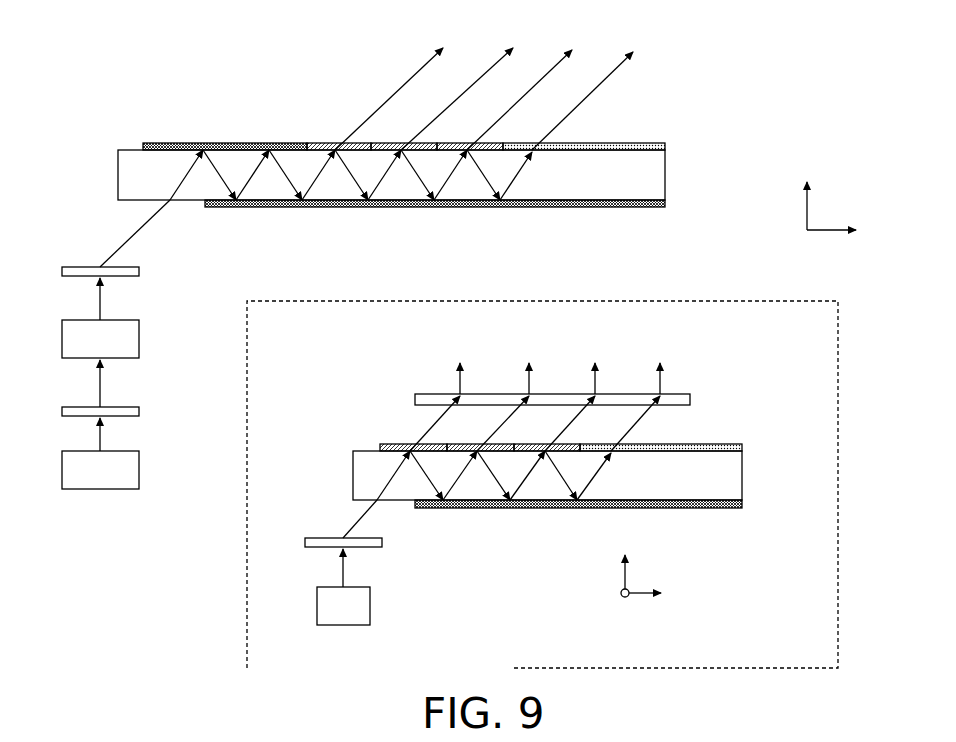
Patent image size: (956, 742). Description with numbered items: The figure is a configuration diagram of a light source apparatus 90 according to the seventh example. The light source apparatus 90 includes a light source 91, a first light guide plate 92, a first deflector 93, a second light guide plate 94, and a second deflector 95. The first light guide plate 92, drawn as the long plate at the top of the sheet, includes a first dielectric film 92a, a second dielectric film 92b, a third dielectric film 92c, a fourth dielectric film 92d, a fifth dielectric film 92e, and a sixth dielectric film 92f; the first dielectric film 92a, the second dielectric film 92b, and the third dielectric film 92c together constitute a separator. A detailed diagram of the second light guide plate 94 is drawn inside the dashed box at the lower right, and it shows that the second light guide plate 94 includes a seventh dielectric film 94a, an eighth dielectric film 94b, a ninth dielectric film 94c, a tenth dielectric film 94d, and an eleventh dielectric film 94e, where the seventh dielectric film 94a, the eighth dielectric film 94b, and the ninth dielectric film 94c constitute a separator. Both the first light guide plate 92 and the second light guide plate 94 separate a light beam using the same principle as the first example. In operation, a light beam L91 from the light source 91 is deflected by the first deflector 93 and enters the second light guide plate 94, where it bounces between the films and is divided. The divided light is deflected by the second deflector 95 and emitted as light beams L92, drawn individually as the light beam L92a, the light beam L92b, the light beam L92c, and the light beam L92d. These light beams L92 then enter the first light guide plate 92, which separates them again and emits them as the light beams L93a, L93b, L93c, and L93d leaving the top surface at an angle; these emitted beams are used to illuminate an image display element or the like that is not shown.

The light source apparatus 90 is at (777, 28).
The light source 91 is at (139, 465).
The first light guide plate 92 is at (118, 187).
The first dielectric film 92a is at (345, 129).
The second dielectric film 92b is at (412, 129).
The third dielectric film 92c is at (478, 129).
The fourth dielectric film 92d is at (655, 129).
The fifth dielectric film 92e is at (635, 207).
The sixth dielectric film 92f is at (223, 143).
The first deflector 93 is at (139, 412).
The second light guide plate 94 is at (139, 335).
The seventh dielectric film 94a is at (420, 431).
The eighth dielectric film 94b is at (482, 431).
The ninth dielectric film 94c is at (548, 431).
The tenth dielectric film 94d is at (748, 433).
The eleventh dielectric film 94e is at (723, 508).
The second deflector 95 is at (139, 272).
The light beam L91 is at (338, 543).
The light beams L92 is at (147, 233).
The light beam L92a is at (478, 366).
The light beam L92b is at (543, 366).
The light beam L92c is at (605, 366).
The light beam L92d is at (674, 366).
The light beam L93a is at (408, 85).
The light beam L93b is at (476, 85).
The light beam L93c is at (541, 86).
The light beam L93d is at (609, 86).